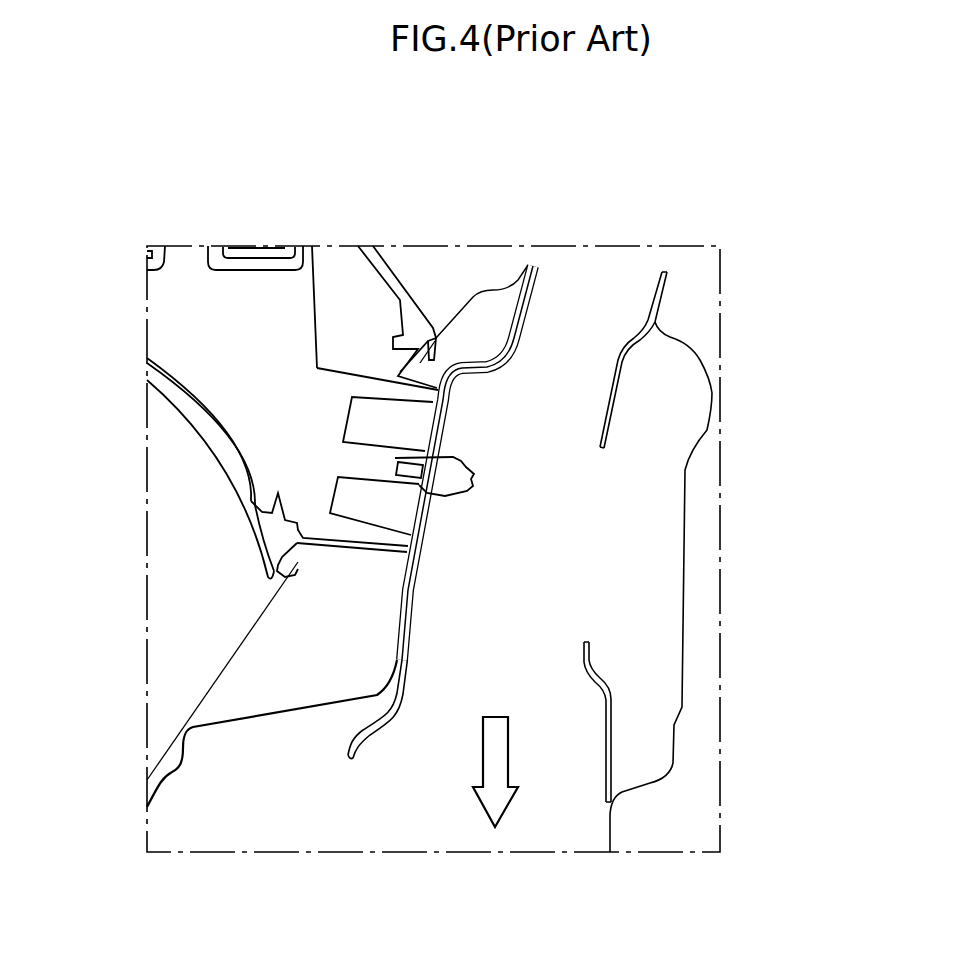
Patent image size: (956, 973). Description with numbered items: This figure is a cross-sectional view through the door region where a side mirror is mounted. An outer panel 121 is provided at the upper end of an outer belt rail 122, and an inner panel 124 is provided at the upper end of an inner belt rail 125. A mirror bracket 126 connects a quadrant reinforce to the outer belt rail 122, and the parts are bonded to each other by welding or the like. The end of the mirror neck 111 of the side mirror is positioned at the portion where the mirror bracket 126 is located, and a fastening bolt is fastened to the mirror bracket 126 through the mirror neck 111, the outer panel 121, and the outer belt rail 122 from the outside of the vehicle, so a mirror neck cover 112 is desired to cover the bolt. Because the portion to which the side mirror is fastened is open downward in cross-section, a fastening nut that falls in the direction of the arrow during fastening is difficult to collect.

The mirror neck 111 is at (197, 332).
The mirror neck cover 112 is at (248, 490).
The outer panel 121 is at (258, 617).
The outer belt rail 122 is at (273, 712).
The inner panel 124 is at (683, 553).
The inner belt rail 125 is at (612, 707).
The mirror bracket 126 is at (420, 603).